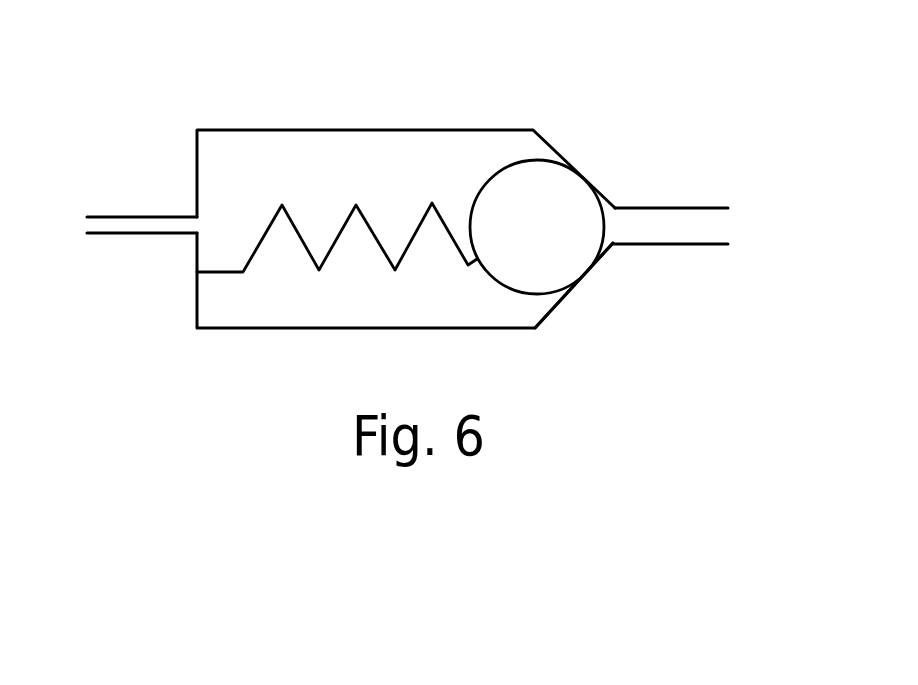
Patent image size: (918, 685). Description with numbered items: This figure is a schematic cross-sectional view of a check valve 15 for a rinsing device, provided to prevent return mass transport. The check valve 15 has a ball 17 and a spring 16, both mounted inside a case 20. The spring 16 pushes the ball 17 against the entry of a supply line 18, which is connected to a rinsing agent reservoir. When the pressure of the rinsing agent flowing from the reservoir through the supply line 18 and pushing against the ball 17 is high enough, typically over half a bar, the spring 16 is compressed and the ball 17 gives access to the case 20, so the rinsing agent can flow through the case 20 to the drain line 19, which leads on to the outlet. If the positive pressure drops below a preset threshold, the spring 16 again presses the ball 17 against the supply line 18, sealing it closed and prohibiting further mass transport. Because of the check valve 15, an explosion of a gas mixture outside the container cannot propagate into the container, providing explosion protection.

The check valve 15 is at (598, 288).
The spring 16 is at (303, 247).
The ball 17 is at (573, 205).
The supply line 18 is at (707, 207).
The drain line 19 is at (138, 233).
The case 20 is at (397, 147).